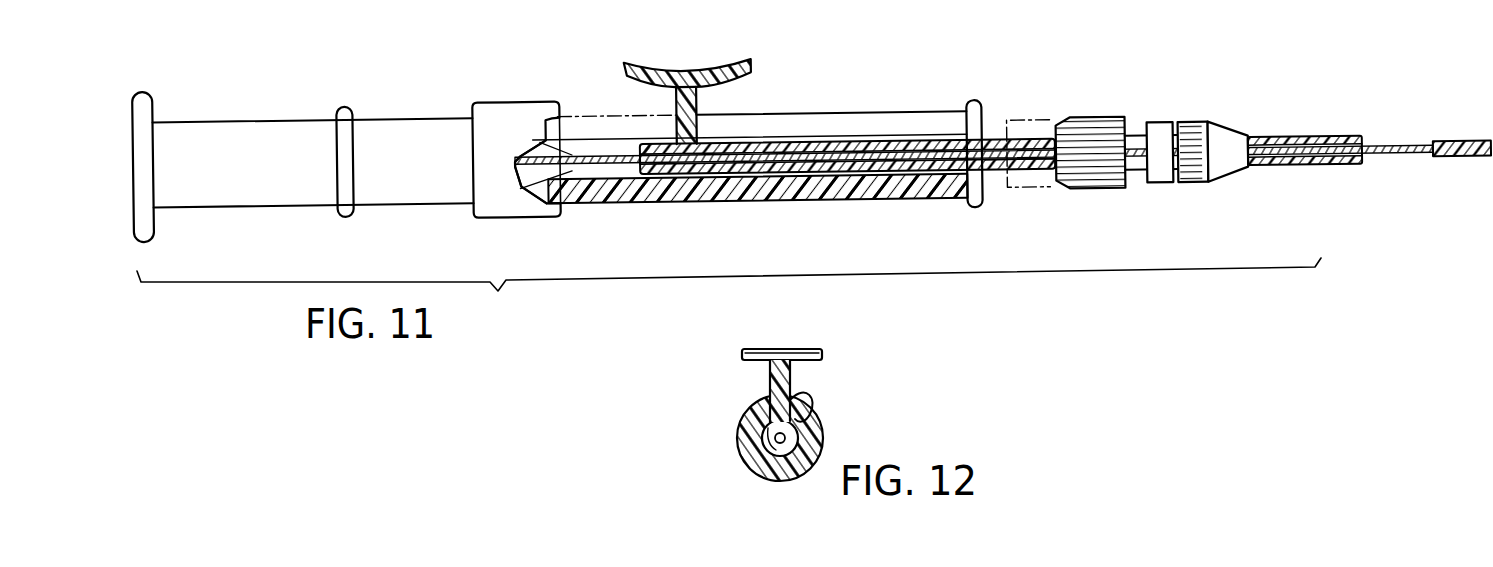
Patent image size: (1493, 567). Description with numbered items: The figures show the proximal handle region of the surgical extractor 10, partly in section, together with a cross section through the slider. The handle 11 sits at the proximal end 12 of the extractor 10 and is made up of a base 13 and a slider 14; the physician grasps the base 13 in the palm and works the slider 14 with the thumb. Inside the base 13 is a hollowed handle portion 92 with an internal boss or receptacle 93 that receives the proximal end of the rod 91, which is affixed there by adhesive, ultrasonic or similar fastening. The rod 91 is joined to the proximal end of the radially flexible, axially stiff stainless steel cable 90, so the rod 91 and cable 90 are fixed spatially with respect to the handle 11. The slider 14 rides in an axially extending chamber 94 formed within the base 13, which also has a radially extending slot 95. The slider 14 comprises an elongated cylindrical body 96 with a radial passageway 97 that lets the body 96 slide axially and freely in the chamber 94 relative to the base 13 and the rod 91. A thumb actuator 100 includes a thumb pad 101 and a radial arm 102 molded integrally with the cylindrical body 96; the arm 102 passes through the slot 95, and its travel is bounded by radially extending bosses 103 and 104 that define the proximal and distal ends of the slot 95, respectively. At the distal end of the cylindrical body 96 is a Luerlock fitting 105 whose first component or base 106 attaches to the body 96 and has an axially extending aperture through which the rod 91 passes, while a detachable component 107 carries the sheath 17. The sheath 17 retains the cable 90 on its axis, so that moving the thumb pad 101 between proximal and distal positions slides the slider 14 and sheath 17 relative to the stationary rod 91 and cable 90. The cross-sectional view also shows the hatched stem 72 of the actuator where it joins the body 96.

In FIG. 11, the surgical extractor 10 is at (1175, 102).
In FIG. 11, the handle 11 is at (374, 209).
In FIG. 11, the proximal end 12 is at (688, 60).
In FIG. 11, the base 13 is at (292, 208).
In FIG. 11, the slider 14 is at (748, 70).
In FIG. 12, the slider 14 is at (795, 358).
In FIG. 11, the sheath 17 is at (1333, 165).
In FIG. 11, the clamp stem 72 is at (699, 103).
In FIG. 11, the cable 90 is at (1456, 141).
In FIG. 11, the rod 91 is at (614, 166).
In FIG. 12, the rod 91 is at (777, 440).
In FIG. 12, the hollowed handle portion 92 is at (824, 438).
In FIG. 11, the receptacle 93 is at (535, 173).
In FIG. 11, the chamber 94 is at (599, 143).
In FIG. 12, the chamber 94 is at (762, 429).
In FIG. 11, the slot 95 is at (918, 116).
In FIG. 12, the slot 95 is at (809, 401).
In FIG. 11, the cylindrical body 96 is at (846, 146).
In FIG. 11, the radial passageway 97 is at (990, 166).
In FIG. 12, the radial passageway 97 is at (768, 462).
In FIG. 11, the thumb actuator 100 is at (752, 90).
In FIG. 12, the thumb actuator 100 is at (797, 411).
In FIG. 12, the thumb pad 101 is at (757, 349).
In FIG. 12, the radial arm 102 is at (769, 380).
In FIG. 11, the boss 103 is at (503, 101).
In FIG. 11, the boss 104 is at (979, 103).
In FIG. 11, the Luerlock fitting 105 is at (1091, 150).
In FIG. 11, the base 106 is at (1078, 191).
In FIG. 11, the detachable component 107 is at (1228, 128).